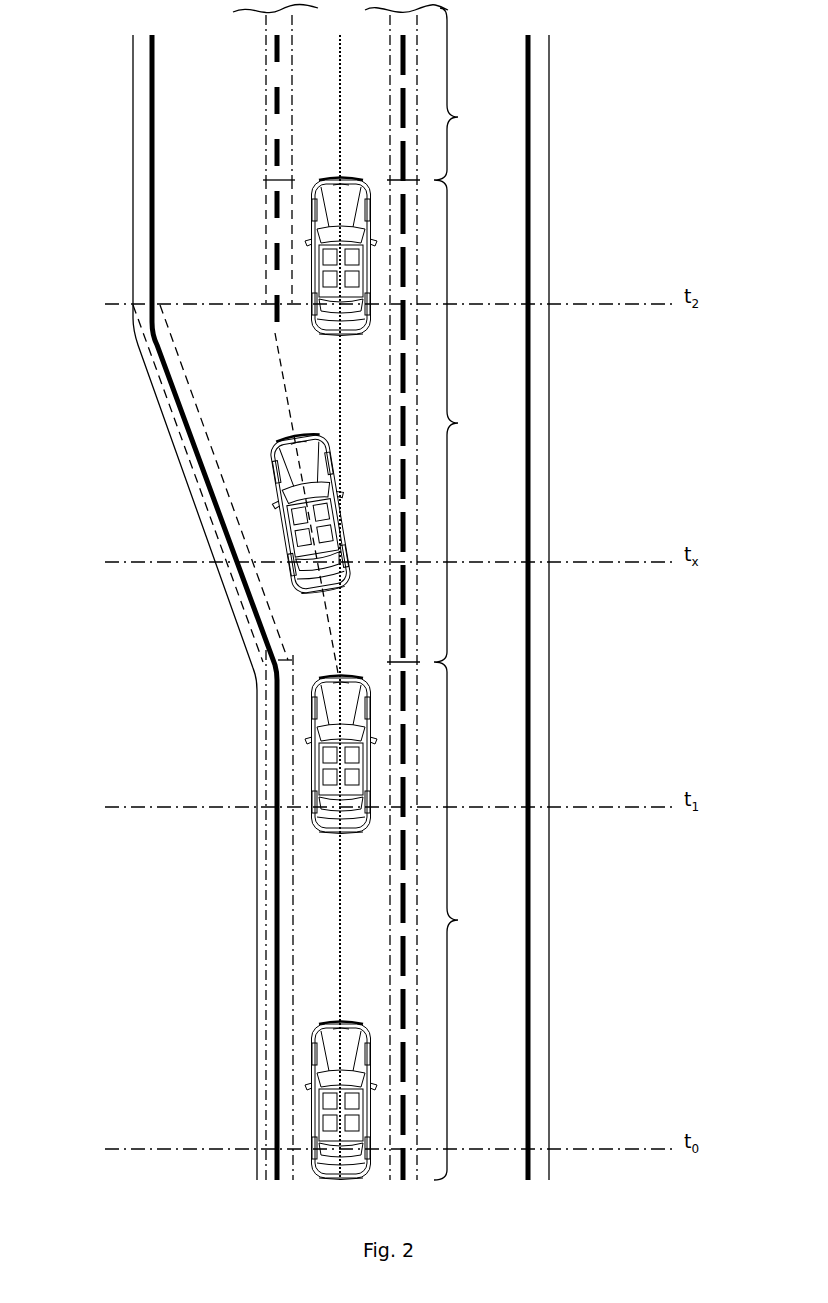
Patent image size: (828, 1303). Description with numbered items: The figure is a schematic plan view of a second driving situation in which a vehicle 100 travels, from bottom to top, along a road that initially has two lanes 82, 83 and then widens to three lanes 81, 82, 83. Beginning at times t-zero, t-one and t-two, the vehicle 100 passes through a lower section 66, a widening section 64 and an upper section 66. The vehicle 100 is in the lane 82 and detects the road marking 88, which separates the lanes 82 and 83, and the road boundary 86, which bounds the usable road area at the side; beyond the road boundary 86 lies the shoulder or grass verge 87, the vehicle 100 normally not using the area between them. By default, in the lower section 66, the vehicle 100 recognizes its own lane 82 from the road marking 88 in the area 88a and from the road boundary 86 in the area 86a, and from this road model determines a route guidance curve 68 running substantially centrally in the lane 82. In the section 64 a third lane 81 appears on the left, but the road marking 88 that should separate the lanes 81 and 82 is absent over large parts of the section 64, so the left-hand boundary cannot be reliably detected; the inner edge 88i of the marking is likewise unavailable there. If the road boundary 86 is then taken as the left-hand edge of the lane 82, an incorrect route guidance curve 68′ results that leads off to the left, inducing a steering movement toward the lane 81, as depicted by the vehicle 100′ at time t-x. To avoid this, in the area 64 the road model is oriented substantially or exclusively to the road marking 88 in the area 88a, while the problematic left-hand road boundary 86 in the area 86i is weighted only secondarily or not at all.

The section 64 is at (469, 421).
The section 66 is at (469, 595).
The route guidance curve 68 is at (338, 93).
The route guidance curve 68′ is at (325, 600).
The lane 81 is at (224, 260).
The lane 82 is at (369, 133).
The lane 83 is at (479, 260).
The road boundary 86 is at (150, 147).
The area 86a is at (265, 1038).
The area 86i is at (190, 470).
The boundary 87 is at (132, 238).
The road marking 88 is at (275, 95).
The area 88a is at (266, 50).
The inner edge of lane marking 88i is at (265, 255).
The vehicle 100 is at (327, 237).
The vehicle 100′ is at (293, 498).